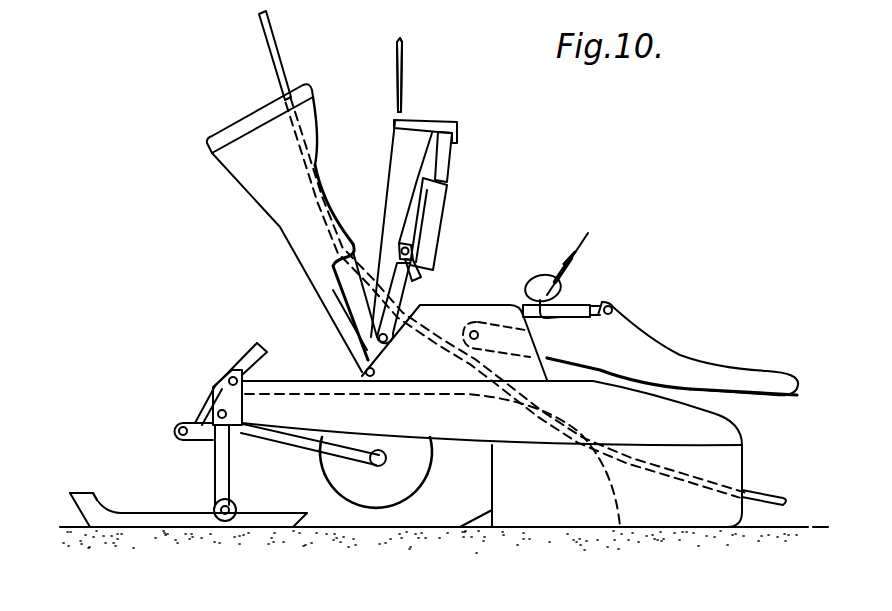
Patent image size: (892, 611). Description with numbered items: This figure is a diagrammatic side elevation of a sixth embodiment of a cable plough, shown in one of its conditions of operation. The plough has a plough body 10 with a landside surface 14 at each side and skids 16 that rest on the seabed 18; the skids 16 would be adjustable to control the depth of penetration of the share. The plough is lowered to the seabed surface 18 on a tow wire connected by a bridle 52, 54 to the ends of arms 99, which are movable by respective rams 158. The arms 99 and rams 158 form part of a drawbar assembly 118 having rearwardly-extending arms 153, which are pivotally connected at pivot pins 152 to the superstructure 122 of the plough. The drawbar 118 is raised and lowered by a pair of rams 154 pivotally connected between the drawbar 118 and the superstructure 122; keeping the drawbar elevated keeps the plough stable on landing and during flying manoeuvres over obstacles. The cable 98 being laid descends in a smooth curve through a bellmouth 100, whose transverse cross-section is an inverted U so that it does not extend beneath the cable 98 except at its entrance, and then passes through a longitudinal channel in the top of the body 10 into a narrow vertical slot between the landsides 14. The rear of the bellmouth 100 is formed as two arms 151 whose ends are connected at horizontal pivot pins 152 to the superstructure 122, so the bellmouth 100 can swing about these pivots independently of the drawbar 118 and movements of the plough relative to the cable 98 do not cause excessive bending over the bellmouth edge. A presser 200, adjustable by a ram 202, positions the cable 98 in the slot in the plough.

The plough body 10 is at (482, 426).
The landside surface 14 is at (568, 508).
The skids 16 is at (175, 491).
The seabed 18 is at (91, 524).
The bridle 52 is at (404, 62).
The bridle 54 is at (399, 75).
The cable 98 is at (262, 28).
The arms 99 is at (422, 118).
The bellmouth 100 is at (247, 118).
The drawbar assembly 118 is at (398, 145).
The superstructure 122 is at (447, 317).
The arms 151 is at (326, 287).
The pivot pins 152 is at (356, 372).
The arms 153 is at (373, 320).
The rams 154 is at (413, 262).
The rams 158 is at (430, 210).
The presser 200 is at (680, 356).
The ram 202 is at (573, 308).